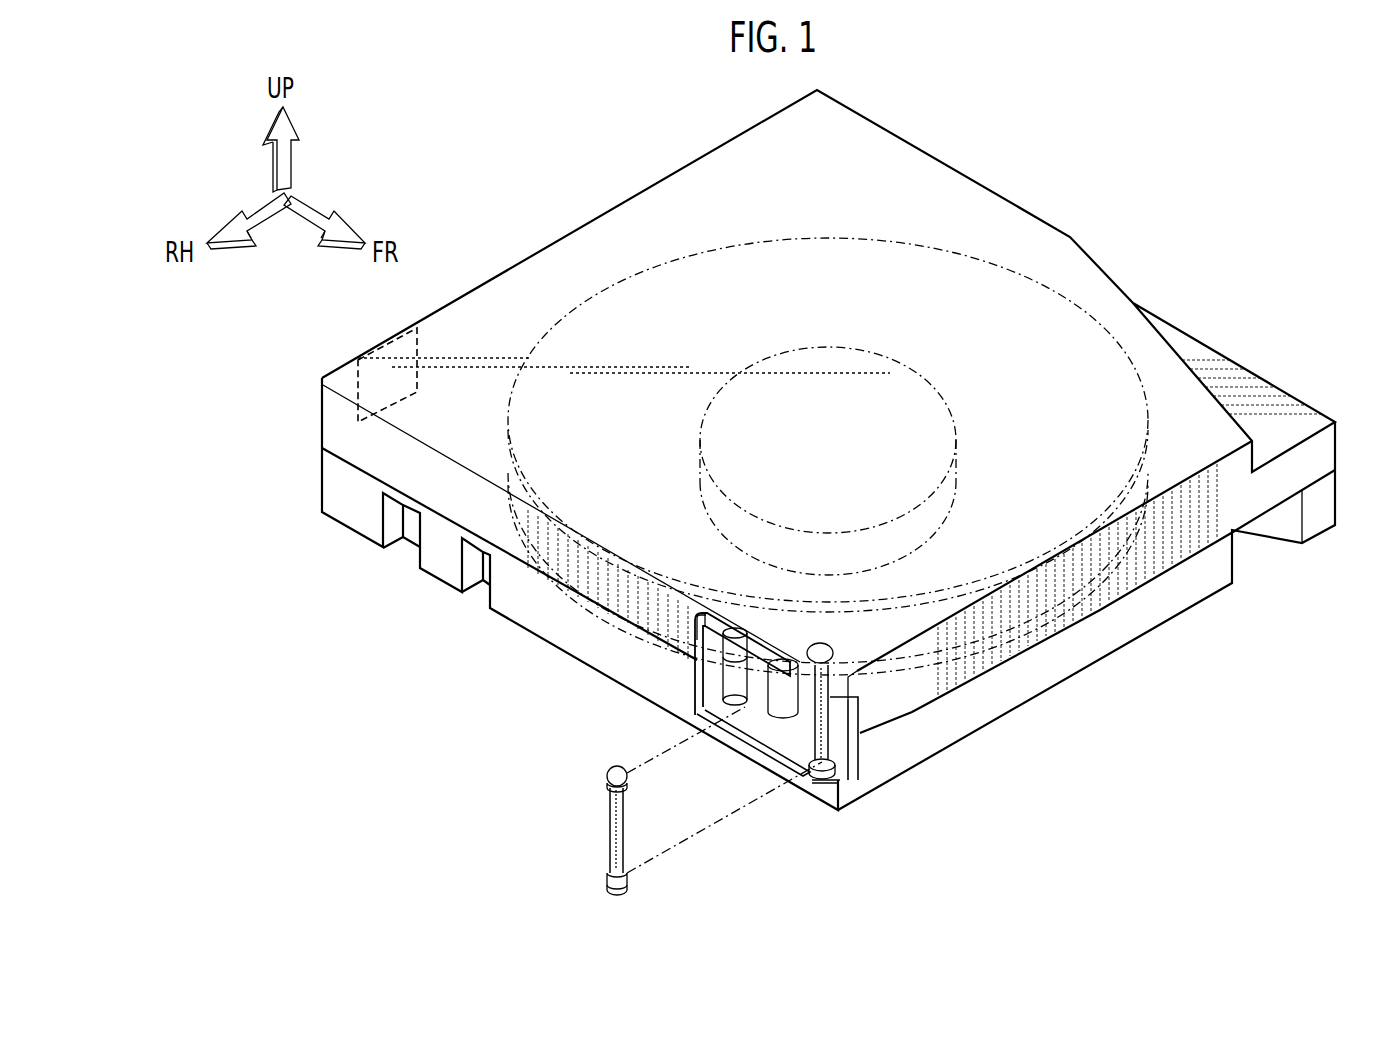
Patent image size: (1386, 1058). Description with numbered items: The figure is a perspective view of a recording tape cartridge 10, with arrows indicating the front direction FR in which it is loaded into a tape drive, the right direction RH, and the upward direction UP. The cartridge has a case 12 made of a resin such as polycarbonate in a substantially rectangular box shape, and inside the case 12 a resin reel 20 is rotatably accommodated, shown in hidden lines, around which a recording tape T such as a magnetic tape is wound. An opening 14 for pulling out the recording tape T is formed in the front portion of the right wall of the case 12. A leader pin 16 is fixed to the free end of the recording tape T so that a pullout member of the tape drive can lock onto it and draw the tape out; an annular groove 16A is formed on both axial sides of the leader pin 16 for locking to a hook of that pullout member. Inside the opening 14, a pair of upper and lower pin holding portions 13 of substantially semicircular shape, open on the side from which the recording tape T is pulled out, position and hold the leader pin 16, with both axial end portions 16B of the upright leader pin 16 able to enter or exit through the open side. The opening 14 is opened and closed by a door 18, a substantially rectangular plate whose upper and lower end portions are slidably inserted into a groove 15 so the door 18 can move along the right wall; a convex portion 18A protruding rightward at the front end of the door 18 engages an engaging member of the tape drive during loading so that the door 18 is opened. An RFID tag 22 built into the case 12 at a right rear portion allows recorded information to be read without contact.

The recording tape cartridge 10 is at (1003, 168).
The case 12 is at (676, 205).
The pin holding portion 13 is at (819, 645).
The opening 14 is at (785, 745).
The groove 15 is at (742, 756).
The leader pin 16 is at (573, 819).
The annular groove 16A is at (607, 786).
The axial end portion 16B is at (610, 768).
The door 18 is at (695, 690).
The convex portion 18A is at (698, 625).
The reel 20 is at (840, 233).
The RFID tag 22 is at (357, 382).
The recording tape T is at (683, 837).